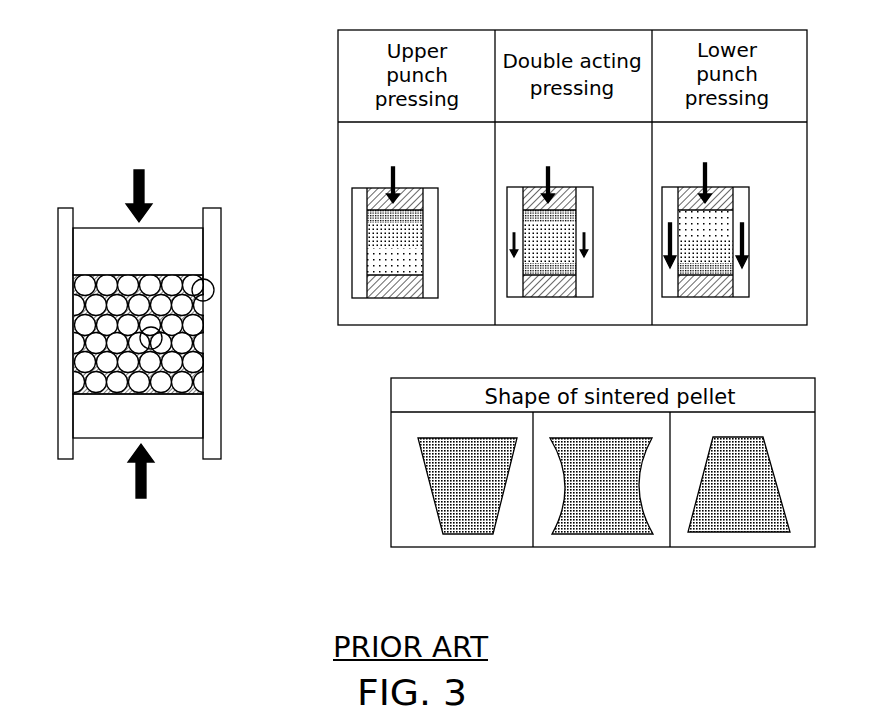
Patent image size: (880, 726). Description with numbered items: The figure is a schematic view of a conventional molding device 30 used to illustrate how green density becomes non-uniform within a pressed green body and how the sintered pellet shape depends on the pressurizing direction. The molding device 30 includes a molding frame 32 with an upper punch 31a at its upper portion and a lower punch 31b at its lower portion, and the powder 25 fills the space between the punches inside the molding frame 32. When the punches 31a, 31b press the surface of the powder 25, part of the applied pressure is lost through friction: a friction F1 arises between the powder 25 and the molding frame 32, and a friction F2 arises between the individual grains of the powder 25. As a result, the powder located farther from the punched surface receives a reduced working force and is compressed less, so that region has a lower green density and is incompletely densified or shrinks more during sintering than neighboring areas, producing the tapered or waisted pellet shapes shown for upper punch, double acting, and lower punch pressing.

The molding device 30 is at (171, 310).
The upper punch 31a is at (99, 226).
The lower punch 31b is at (97, 432).
The molding frame 32 is at (222, 417).
The powder 25 is at (200, 363).
The friction between powder and molding frame F1 is at (214, 290).
The friction between powder grains F2 is at (162, 337).